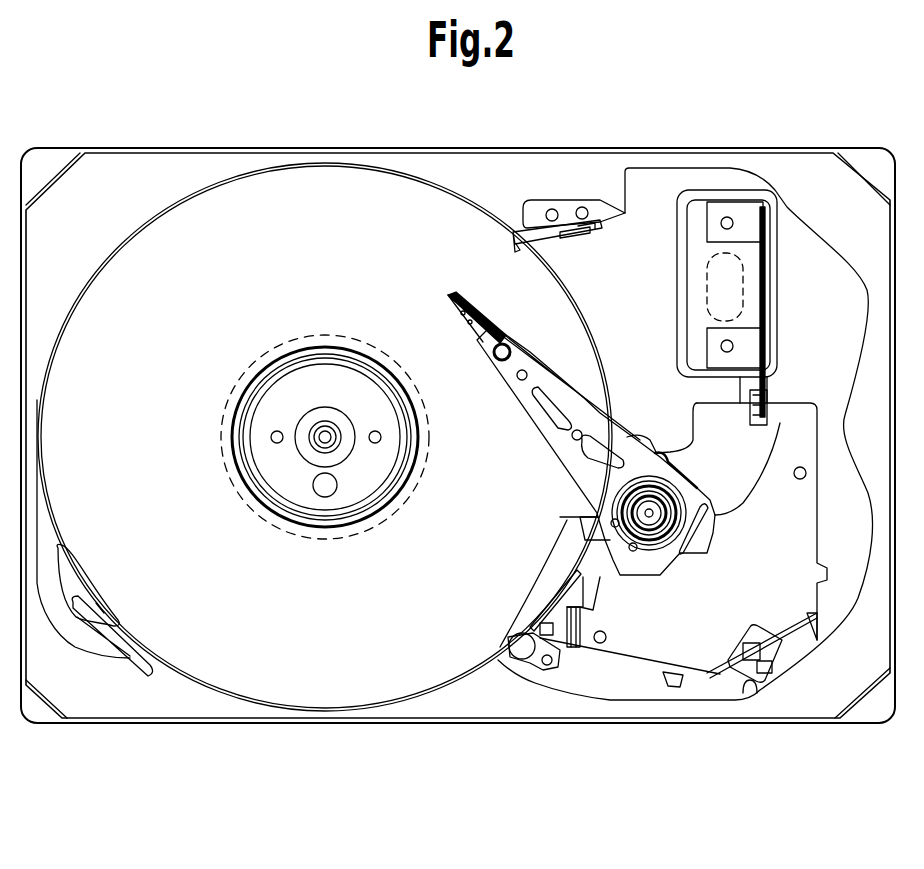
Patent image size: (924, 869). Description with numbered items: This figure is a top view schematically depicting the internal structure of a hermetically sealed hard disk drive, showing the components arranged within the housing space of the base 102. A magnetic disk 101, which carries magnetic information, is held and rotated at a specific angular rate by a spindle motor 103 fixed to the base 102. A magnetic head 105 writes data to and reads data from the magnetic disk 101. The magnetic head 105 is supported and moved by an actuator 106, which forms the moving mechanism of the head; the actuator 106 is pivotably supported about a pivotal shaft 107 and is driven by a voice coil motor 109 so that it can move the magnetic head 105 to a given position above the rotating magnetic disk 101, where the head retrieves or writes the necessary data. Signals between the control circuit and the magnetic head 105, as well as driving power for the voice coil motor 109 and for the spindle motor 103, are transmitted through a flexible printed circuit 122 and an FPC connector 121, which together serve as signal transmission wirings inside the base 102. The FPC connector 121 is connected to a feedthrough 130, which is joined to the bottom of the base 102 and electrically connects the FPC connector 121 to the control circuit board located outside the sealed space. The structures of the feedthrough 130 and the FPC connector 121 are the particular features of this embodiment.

The magnetic disk 101 is at (577, 305).
The base 102 is at (378, 723).
The spindle motor (SPM) 103 is at (302, 539).
The magnetic head 105 is at (463, 306).
The actuator 106 is at (510, 403).
The pivotal shaft 107 is at (612, 515).
The voice coil motor (VCM) 109 is at (720, 656).
The FPC connector 121 is at (777, 333).
The flexible printed circuit (FPC) 122 is at (697, 440).
The feedthrough 130 is at (700, 280).